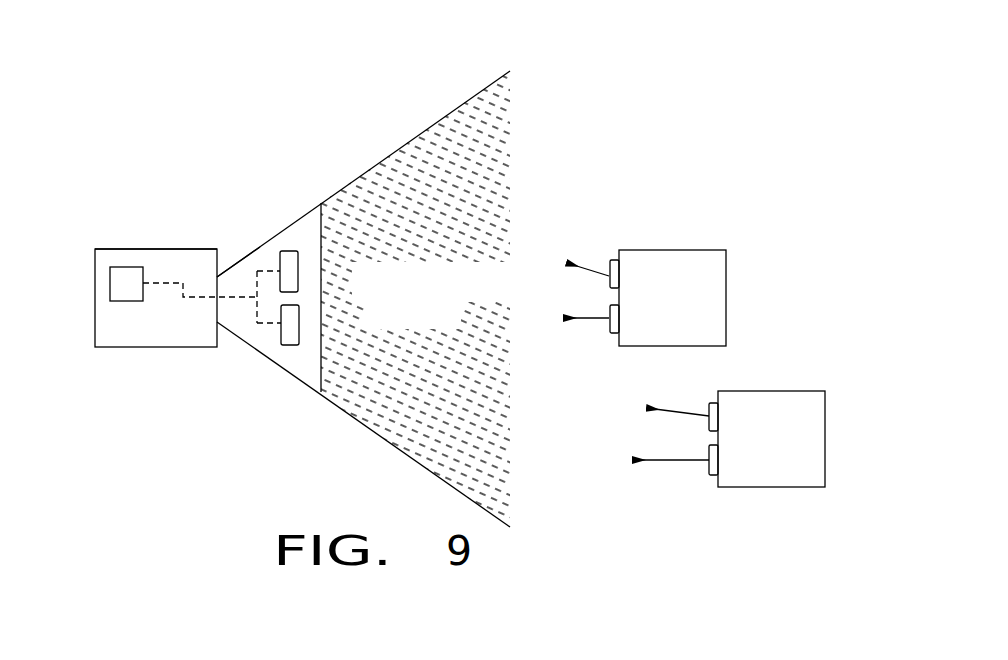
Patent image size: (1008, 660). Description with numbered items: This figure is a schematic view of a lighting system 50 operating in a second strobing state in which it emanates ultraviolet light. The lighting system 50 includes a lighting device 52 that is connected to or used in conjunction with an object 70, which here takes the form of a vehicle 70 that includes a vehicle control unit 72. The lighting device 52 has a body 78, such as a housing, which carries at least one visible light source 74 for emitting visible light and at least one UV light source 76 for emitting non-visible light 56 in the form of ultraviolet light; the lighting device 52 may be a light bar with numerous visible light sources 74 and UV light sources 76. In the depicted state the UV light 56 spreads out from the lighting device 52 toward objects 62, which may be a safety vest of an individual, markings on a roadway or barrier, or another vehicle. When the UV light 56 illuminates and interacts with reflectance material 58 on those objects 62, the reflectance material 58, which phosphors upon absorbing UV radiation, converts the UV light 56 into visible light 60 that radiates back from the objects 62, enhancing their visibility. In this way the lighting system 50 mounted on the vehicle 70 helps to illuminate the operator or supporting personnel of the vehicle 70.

The lighting system 50 is at (325, 123).
The lighting device 52 is at (256, 249).
The non-visible light 56 is at (418, 299).
The reflectance material 58 is at (601, 262).
The visible light 60 is at (584, 268).
The object 62 is at (727, 275).
The object 70 is at (150, 348).
The vehicle control unit 72 is at (110, 279).
The visible light source 74 is at (288, 250).
The UV light source 76 is at (290, 346).
The body 78 is at (162, 248).